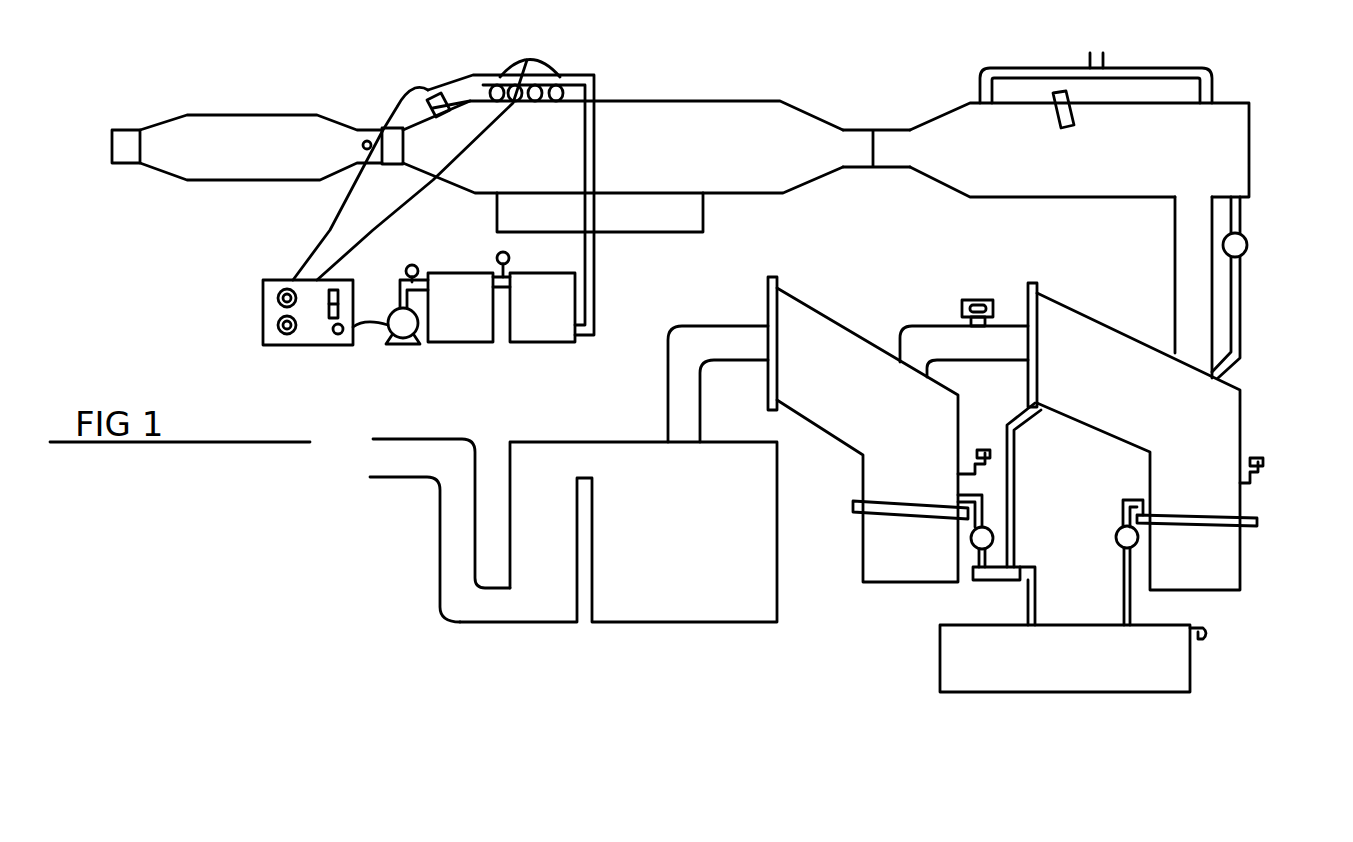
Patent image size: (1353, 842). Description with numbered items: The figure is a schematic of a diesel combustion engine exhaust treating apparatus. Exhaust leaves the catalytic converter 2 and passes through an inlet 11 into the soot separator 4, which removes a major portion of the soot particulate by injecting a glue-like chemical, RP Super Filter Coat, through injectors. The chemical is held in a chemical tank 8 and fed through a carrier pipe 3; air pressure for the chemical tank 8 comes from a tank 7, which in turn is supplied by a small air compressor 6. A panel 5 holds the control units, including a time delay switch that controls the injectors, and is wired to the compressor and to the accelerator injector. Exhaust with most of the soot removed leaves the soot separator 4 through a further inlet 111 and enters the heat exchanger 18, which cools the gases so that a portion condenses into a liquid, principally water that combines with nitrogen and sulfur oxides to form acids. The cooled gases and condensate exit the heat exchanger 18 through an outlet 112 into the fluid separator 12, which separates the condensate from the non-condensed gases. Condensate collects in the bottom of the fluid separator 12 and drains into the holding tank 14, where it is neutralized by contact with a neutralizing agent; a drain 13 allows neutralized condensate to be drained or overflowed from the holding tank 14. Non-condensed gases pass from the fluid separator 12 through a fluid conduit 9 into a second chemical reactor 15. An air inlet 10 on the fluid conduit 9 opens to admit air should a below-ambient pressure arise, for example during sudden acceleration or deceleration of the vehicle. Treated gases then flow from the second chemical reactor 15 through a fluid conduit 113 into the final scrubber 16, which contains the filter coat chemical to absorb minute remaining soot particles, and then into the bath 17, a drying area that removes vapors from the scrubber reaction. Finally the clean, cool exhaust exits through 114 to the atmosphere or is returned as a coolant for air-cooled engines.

The catalytic converter 2 is at (255, 113).
The inlet 11 is at (131, 130).
The carrier pipe 3 is at (480, 75).
The soot separator 4 is at (745, 100).
The inlet 111 is at (890, 128).
The heat exchanger 18 is at (1228, 103).
The panel 5 is at (258, 308).
The air compressor 6 is at (403, 347).
The tank 7 is at (465, 345).
The chemical tank 8 is at (550, 345).
The fluid conduit 113 is at (668, 390).
The fluid conduit 9 is at (915, 326).
The air inlet 10 is at (977, 298).
The second chemical reactor 15 is at (863, 555).
The fluid separator 12 is at (1247, 425).
The outlet 112 is at (1213, 290).
The holding tank 14 is at (1098, 680).
The drain 13 is at (1212, 637).
The final scrubber 16 is at (690, 622).
The bath 17 is at (525, 622).
The exhaust exit 114 is at (440, 553).